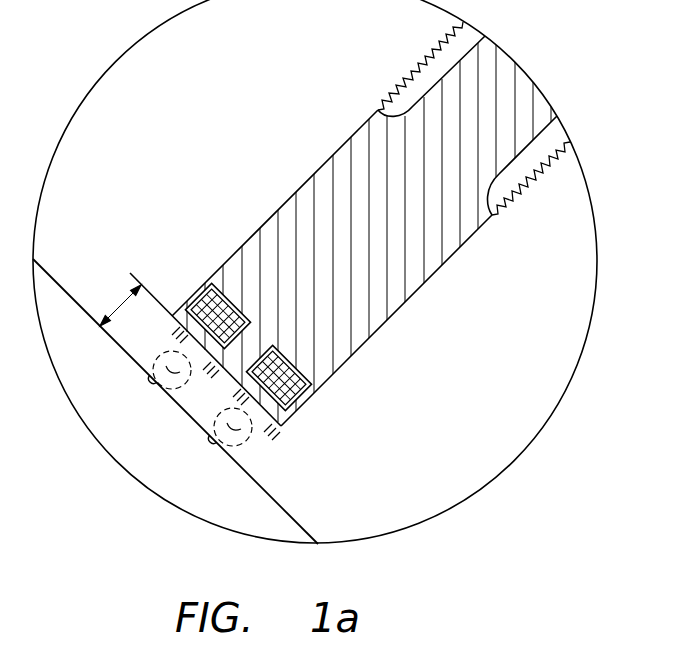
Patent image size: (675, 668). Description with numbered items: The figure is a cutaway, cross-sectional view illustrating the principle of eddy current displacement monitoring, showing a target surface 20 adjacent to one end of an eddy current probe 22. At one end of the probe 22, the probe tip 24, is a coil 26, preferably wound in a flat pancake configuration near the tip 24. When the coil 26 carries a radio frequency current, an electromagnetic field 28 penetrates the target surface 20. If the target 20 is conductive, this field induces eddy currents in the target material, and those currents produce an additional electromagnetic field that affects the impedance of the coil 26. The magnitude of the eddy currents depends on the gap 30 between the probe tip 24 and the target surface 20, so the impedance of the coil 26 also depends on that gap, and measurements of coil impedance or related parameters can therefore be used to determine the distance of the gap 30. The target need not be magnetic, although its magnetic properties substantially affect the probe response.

The target surface 20 is at (278, 481).
The eddy current probe 22 is at (320, 165).
The probe tip 24 is at (228, 373).
The coil 26 is at (214, 283).
The electromagnetic field 28 is at (150, 369).
The gap 30 is at (118, 306).